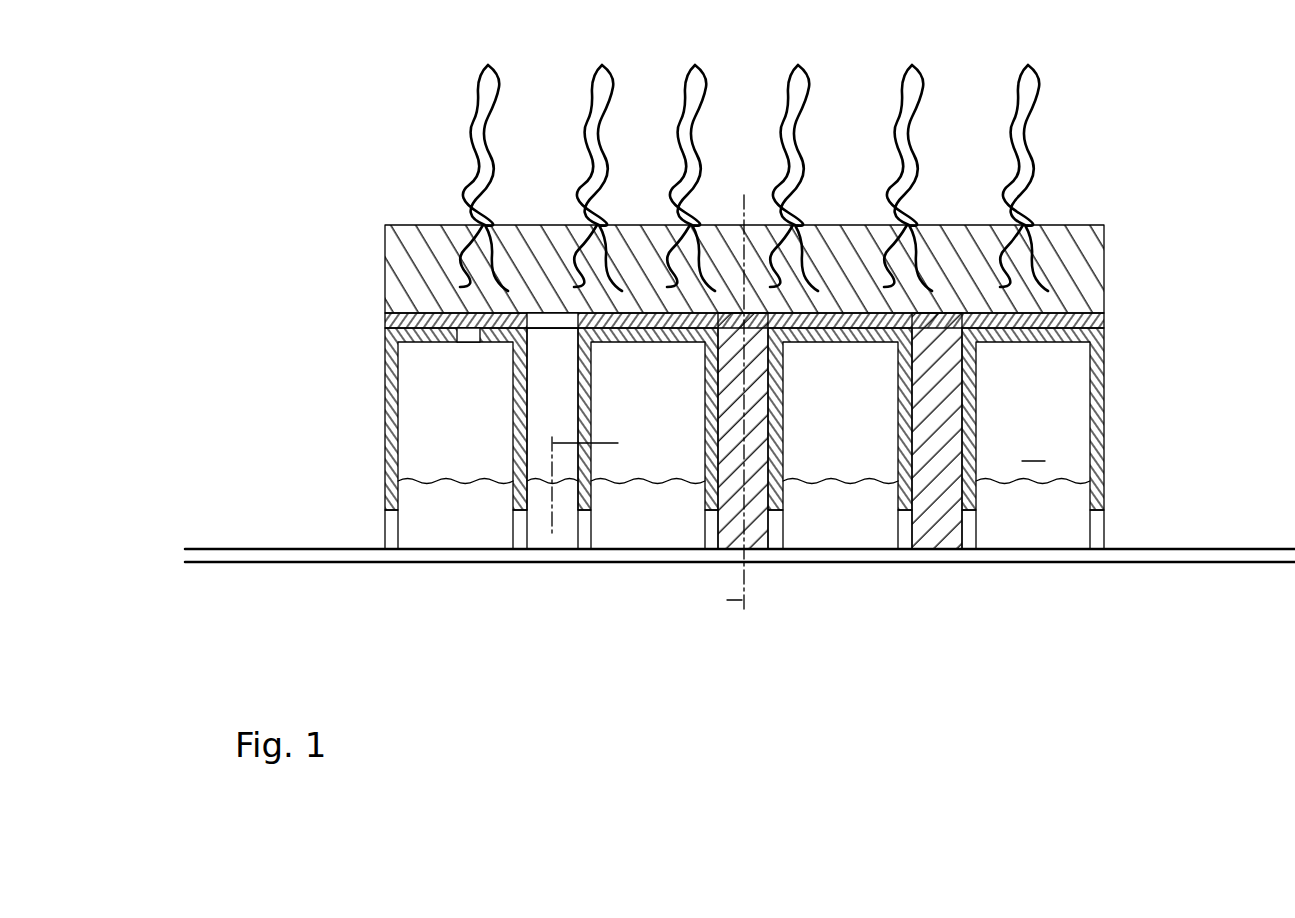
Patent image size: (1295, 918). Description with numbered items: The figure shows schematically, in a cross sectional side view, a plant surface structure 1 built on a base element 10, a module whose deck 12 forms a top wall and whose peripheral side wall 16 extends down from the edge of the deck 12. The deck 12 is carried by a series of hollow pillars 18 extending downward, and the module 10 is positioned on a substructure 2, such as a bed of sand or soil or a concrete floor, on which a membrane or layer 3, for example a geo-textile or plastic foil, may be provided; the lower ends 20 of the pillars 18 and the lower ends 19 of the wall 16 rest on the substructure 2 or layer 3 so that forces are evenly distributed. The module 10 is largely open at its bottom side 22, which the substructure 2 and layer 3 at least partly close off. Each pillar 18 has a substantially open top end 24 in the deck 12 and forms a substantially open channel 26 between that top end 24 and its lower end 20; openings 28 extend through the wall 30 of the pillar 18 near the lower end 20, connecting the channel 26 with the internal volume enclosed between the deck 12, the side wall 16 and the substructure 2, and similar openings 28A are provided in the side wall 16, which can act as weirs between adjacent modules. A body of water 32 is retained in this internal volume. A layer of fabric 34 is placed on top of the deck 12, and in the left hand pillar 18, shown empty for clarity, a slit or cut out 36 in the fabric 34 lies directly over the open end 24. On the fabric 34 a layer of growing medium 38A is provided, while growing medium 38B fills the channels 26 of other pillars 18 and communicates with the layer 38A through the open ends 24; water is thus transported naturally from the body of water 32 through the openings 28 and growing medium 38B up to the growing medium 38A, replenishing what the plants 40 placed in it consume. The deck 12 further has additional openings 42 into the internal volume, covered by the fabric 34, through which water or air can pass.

The plant surface structure 1 is at (1194, 206).
The substructure 2 is at (1249, 618).
The membrane or layer 3 is at (1260, 556).
The base element 10 is at (743, 408).
The deck 12 is at (1033, 334).
The side wall 16 is at (434, 362).
The pillar 18 is at (509, 438).
The lower end of wall 19 is at (392, 550).
The lower end of pillar 20 is at (552, 539).
The bottom side 22 is at (757, 573).
The open top end 24 is at (543, 327).
The channel 26 is at (565, 402).
The opening 28 is at (905, 530).
The opening in side wall 28A is at (392, 529).
The wall of pillar 30 is at (586, 388).
The body of water 32 is at (1062, 530).
The fabric 34 is at (1088, 321).
The slit or cut out 36 is at (558, 319).
The layer of growing medium 38A is at (1090, 271).
The growing medium in channel 38B is at (937, 530).
The plant 40 is at (925, 85).
The additional opening 42 is at (469, 334).